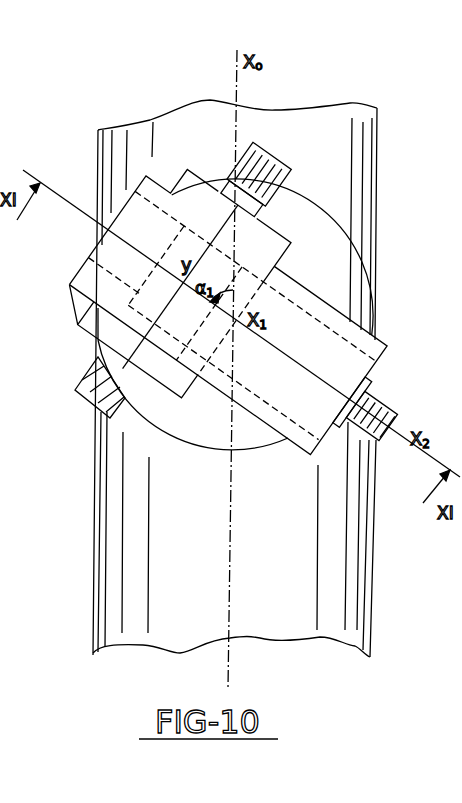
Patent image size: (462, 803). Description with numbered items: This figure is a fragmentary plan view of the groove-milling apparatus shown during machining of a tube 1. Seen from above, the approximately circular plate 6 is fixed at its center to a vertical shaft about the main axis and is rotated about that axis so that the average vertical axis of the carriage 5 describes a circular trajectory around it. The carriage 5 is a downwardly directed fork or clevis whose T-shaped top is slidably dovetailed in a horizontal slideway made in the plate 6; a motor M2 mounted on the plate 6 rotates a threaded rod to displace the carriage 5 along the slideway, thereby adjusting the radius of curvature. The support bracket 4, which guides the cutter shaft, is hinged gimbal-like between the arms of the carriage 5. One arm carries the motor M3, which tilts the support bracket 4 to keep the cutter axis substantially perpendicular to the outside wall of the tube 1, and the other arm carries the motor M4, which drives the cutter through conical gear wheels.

The tube 1 is at (350, 596).
The support bracket 4 is at (88, 255).
The carriage 5 is at (191, 378).
The plate 6 is at (367, 275).
The motor M2 is at (391, 399).
The motor M3 is at (74, 390).
The motor M4 is at (270, 150).